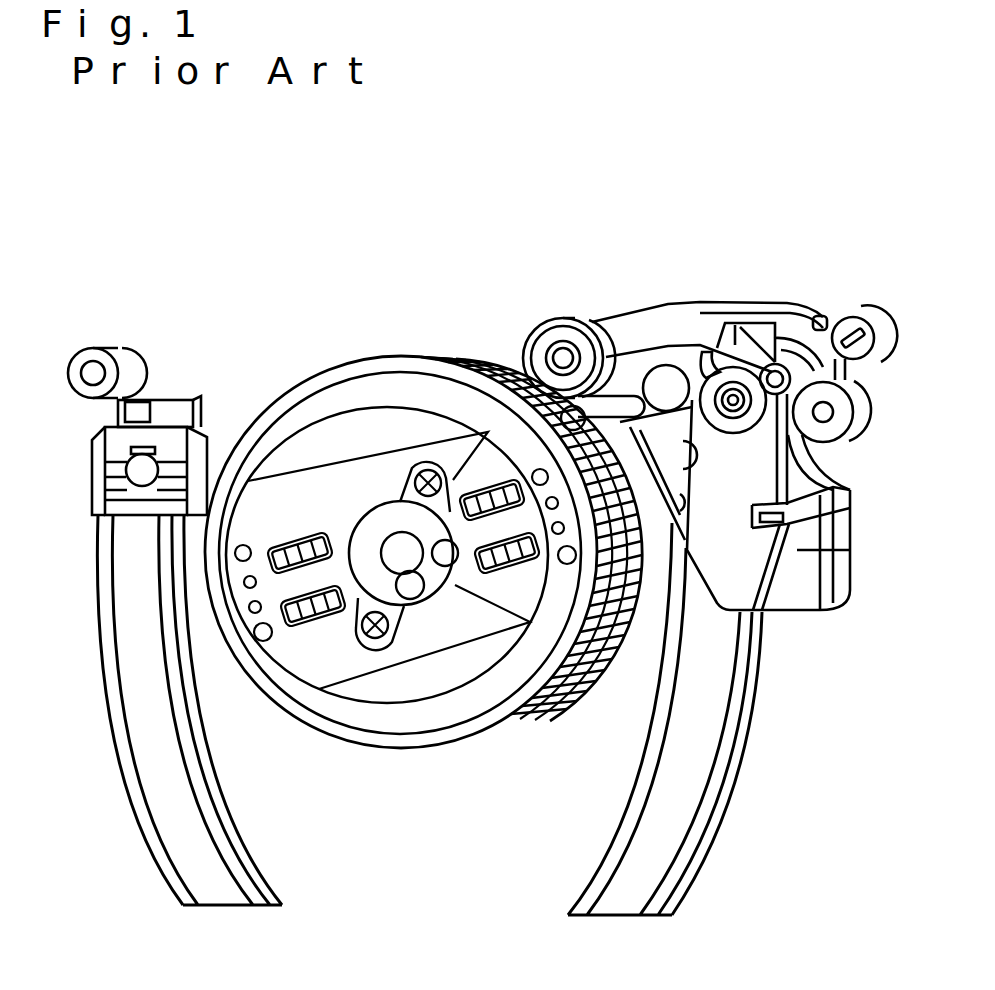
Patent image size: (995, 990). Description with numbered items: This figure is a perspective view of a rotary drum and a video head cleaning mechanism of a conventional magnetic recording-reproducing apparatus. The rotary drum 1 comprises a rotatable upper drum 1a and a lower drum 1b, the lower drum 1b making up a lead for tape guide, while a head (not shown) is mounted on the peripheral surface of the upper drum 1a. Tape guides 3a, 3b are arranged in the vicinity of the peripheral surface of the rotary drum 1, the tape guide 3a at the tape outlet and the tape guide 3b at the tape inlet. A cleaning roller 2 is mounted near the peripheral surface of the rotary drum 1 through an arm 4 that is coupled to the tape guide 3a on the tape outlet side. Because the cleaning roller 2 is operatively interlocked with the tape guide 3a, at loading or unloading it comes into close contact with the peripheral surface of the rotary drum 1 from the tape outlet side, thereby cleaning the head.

The rotary drum 1 is at (538, 238).
The upper drum 1a is at (418, 356).
The lower drum 1b is at (505, 360).
The cleaning roller 2 is at (598, 325).
The tape guide 3a is at (665, 368).
The tape guide 3b is at (143, 398).
The arm 4 is at (786, 305).